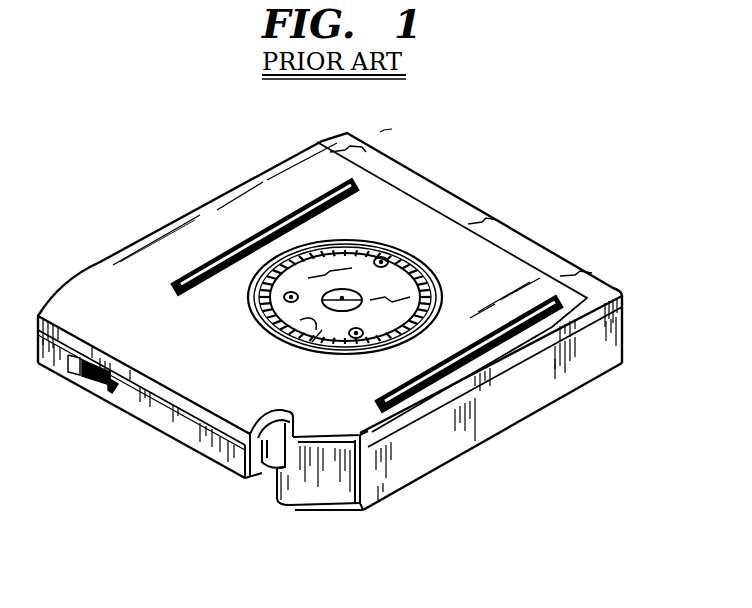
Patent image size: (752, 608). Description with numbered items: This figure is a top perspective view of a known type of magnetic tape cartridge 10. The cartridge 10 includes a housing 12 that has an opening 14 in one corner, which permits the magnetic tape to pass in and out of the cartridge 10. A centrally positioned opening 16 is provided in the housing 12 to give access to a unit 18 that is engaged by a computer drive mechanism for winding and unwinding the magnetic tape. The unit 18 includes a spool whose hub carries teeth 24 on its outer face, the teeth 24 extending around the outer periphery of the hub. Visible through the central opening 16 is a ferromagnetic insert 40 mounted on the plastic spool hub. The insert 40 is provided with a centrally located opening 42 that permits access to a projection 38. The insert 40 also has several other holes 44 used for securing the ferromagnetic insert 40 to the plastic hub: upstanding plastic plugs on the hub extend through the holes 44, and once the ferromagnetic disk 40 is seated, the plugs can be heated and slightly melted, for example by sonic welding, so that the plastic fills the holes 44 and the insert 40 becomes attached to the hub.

The cartridge 10 is at (330, 303).
The housing 12 is at (243, 205).
The opening 14 is at (281, 411).
The centrally positioned opening 16 is at (441, 283).
The unit 18 is at (262, 322).
The teeth 24 is at (333, 290).
The projection 38 is at (417, 318).
The ferromagnetic insert 40 is at (335, 272).
The centrally located opening 42 is at (302, 352).
The holes 44 is at (267, 262).